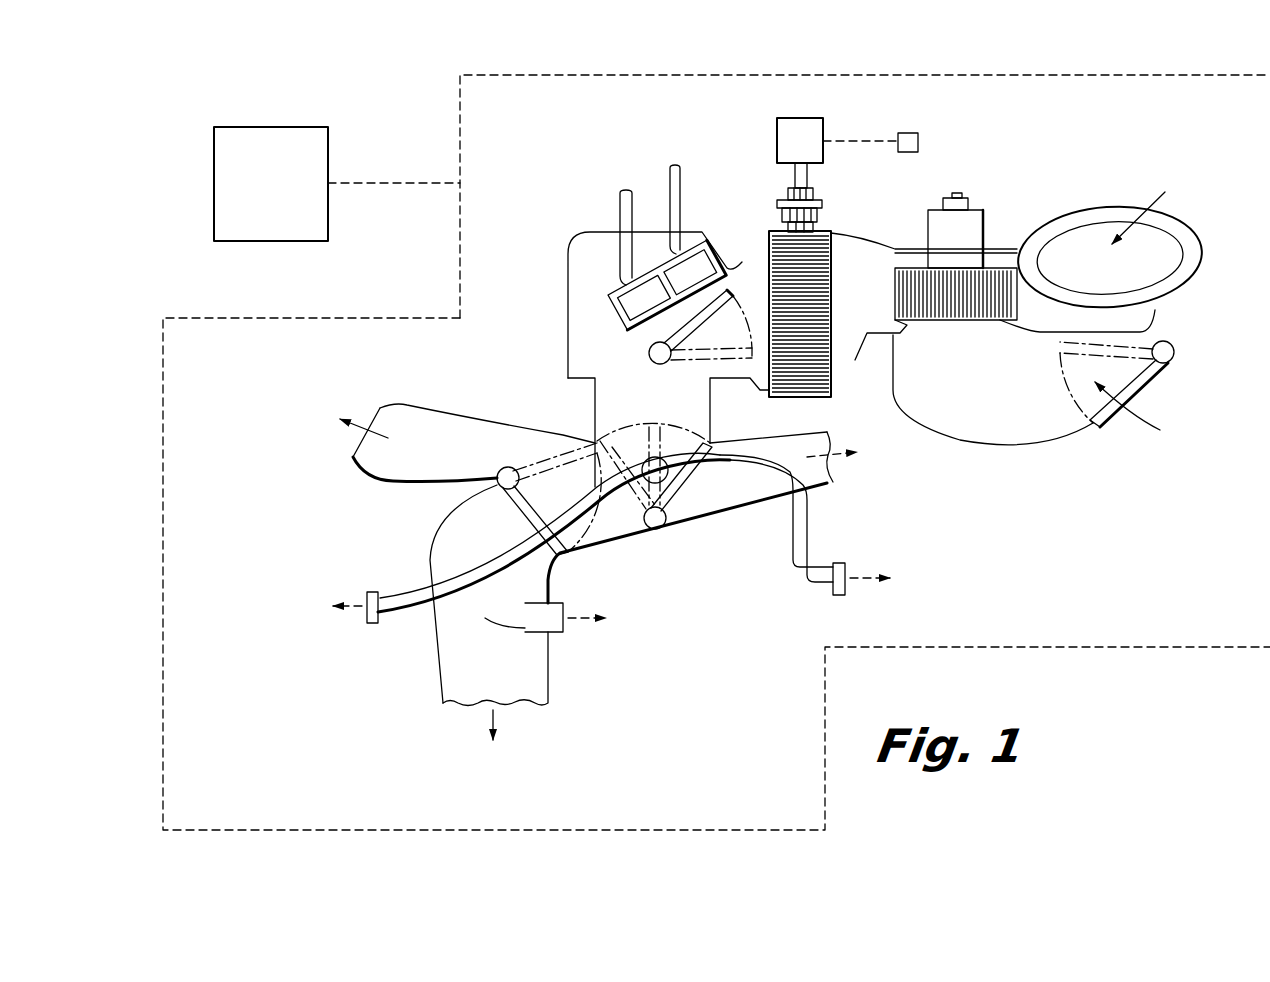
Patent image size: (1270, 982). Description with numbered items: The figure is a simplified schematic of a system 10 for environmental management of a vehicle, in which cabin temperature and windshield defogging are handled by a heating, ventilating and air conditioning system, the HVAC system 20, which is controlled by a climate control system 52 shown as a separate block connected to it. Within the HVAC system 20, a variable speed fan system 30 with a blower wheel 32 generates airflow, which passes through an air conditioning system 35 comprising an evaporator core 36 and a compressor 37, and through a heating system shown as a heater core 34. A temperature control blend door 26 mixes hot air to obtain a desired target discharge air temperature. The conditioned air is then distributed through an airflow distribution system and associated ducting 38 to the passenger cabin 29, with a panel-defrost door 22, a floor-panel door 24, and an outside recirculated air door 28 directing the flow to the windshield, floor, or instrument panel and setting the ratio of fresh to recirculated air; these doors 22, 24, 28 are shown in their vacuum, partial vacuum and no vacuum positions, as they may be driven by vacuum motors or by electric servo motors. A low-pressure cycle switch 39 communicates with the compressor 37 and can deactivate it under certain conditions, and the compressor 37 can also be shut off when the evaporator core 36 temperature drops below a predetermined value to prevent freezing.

The system 10 is at (415, 74).
The HVAC system 20 is at (1020, 196).
The panel-defrost door 22 is at (500, 527).
The floor-panel door 24 is at (677, 487).
The temperature control blend door 26 is at (672, 332).
The outside recirculated air door 28 is at (1148, 375).
The passenger cabin 29 is at (308, 733).
The variable speed fan system 30 is at (940, 232).
The blower wheel 32 is at (903, 278).
The heater core 34 is at (615, 317).
The air conditioning system 35 is at (810, 167).
The evaporator core 36 is at (781, 247).
The compressor 37 is at (777, 138).
The ducting 38 is at (822, 490).
The low-pressure cycle switch 39 is at (920, 140).
The climate control system 52 is at (229, 125).